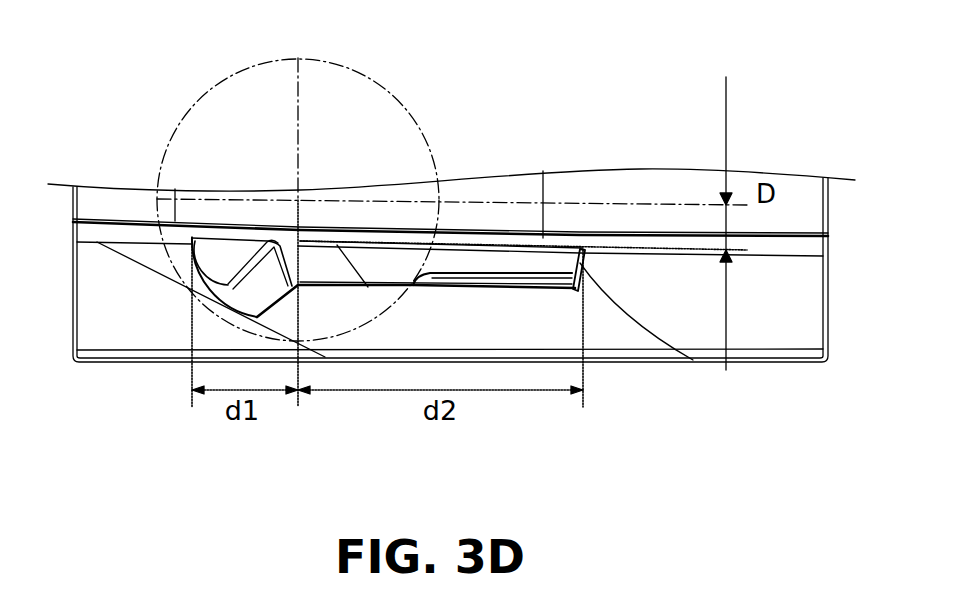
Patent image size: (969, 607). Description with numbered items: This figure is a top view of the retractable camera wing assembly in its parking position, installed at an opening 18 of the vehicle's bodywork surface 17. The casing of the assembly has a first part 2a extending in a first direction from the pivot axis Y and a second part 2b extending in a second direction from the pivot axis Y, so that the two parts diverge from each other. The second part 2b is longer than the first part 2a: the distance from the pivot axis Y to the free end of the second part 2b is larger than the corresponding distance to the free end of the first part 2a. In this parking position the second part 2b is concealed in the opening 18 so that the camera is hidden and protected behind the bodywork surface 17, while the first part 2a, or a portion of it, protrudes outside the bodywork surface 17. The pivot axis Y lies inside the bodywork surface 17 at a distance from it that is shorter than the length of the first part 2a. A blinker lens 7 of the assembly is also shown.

The first part of the casing 2a is at (227, 255).
The second part of the casing 2b is at (382, 263).
The blinker lens 7 is at (527, 275).
The bodywork surface 17 is at (632, 297).
The opening 18 is at (553, 248).
The pivot axis Y is at (297, 188).